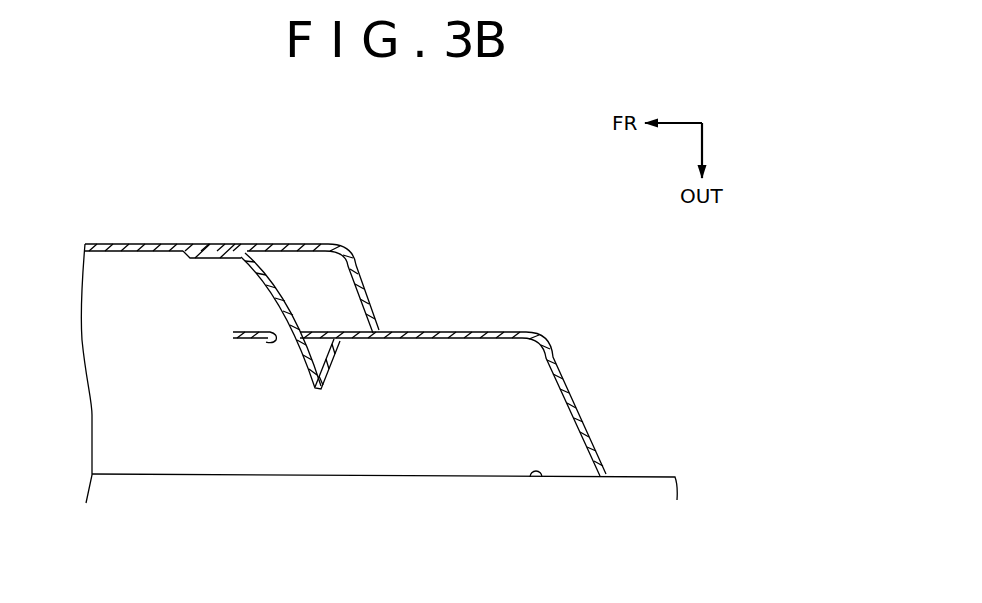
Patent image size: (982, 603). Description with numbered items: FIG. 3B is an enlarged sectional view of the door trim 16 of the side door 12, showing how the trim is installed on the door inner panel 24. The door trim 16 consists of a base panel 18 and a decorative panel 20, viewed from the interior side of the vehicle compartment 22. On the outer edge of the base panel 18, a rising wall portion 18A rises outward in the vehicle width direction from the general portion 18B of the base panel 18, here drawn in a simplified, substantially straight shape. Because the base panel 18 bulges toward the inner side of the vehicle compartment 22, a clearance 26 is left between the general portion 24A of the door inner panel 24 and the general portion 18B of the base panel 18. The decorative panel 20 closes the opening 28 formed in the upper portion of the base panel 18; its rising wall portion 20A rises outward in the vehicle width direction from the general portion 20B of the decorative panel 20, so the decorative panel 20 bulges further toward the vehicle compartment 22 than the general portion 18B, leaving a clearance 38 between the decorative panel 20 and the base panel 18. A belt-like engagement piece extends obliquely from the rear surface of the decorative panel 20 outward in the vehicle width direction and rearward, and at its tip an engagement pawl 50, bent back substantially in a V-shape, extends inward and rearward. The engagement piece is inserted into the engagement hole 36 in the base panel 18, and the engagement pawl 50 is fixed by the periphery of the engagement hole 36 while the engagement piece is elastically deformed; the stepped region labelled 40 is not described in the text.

The side door 12 is at (618, 275).
The door trim 16 is at (463, 275).
The base panel 18 is at (480, 381).
The rising wall portion 18A is at (578, 392).
The general portion 18B is at (452, 332).
The decorative panel 20 is at (267, 278).
The rising wall portion 20A is at (376, 287).
The general portion 20B is at (133, 244).
The vehicle compartment 22 is at (234, 113).
The door inner panel 24 is at (649, 474).
The general portion 24A is at (538, 483).
The clearance 26 is at (443, 412).
The opening 28 is at (198, 348).
The engagement hole 36 is at (275, 341).
The clearance 38 is at (361, 249).
The step portion 40 is at (220, 267).
The engagement pawl 50 is at (331, 357).